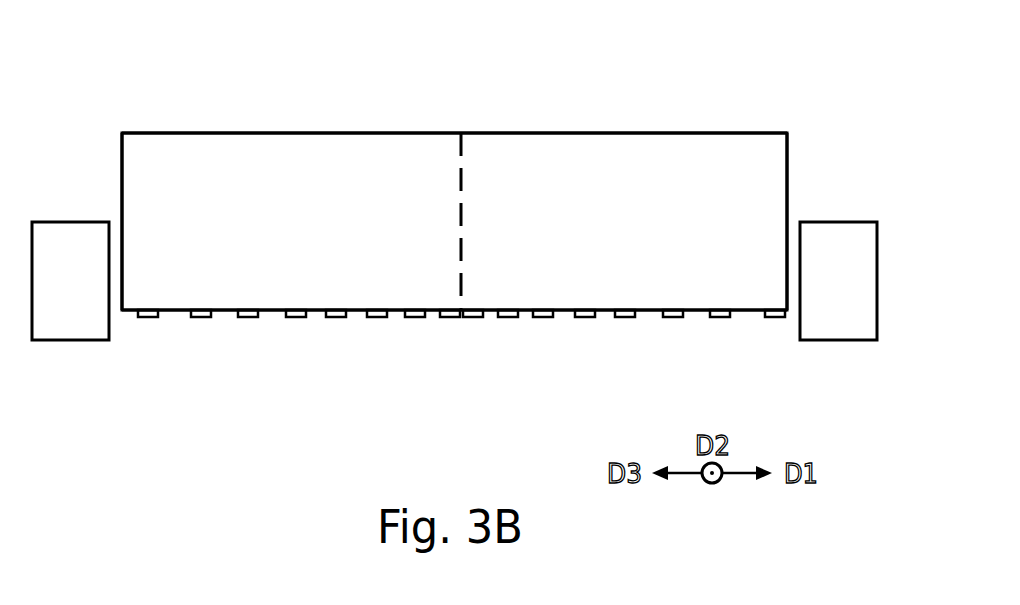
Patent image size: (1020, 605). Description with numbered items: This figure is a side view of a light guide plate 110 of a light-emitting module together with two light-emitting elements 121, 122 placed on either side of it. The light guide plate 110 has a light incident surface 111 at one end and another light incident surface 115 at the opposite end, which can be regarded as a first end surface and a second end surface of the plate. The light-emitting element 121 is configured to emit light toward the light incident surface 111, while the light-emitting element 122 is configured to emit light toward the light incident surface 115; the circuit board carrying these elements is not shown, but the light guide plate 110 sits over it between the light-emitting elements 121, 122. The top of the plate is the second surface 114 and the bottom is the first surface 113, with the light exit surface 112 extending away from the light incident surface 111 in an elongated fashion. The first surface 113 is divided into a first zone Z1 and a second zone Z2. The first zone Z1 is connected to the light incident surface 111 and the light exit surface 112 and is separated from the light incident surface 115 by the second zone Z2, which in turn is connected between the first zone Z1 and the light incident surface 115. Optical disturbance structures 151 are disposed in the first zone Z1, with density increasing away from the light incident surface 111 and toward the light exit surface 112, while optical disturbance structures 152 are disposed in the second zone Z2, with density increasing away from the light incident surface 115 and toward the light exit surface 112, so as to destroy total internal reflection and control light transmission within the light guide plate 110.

The light guide plate 110 is at (808, 70).
The light incident surface 111 is at (122, 152).
The light exit surface 112 is at (306, 236).
The first surface 113 is at (560, 398).
The second surface 114 is at (315, 133).
The light incident surface 115 is at (788, 150).
The light-emitting element 121 is at (63, 222).
The light-emitting element 122 is at (845, 222).
The optical disturbance structures 151 is at (248, 318).
The optical disturbance structures 152 is at (673, 318).
The first zone Z1 is at (358, 318).
The second zone Z2 is at (563, 318).